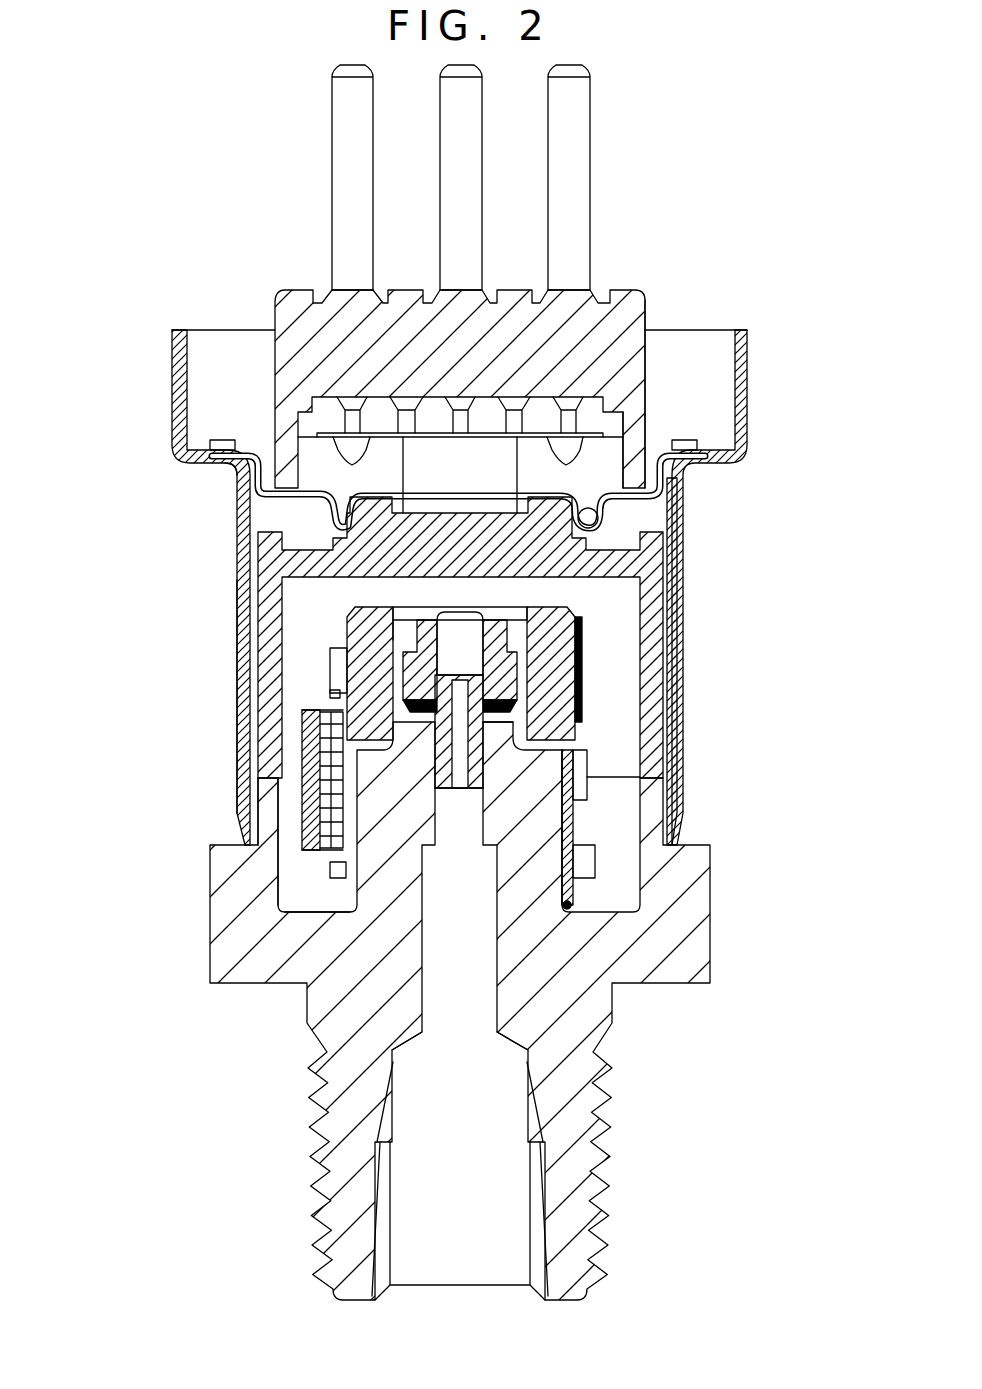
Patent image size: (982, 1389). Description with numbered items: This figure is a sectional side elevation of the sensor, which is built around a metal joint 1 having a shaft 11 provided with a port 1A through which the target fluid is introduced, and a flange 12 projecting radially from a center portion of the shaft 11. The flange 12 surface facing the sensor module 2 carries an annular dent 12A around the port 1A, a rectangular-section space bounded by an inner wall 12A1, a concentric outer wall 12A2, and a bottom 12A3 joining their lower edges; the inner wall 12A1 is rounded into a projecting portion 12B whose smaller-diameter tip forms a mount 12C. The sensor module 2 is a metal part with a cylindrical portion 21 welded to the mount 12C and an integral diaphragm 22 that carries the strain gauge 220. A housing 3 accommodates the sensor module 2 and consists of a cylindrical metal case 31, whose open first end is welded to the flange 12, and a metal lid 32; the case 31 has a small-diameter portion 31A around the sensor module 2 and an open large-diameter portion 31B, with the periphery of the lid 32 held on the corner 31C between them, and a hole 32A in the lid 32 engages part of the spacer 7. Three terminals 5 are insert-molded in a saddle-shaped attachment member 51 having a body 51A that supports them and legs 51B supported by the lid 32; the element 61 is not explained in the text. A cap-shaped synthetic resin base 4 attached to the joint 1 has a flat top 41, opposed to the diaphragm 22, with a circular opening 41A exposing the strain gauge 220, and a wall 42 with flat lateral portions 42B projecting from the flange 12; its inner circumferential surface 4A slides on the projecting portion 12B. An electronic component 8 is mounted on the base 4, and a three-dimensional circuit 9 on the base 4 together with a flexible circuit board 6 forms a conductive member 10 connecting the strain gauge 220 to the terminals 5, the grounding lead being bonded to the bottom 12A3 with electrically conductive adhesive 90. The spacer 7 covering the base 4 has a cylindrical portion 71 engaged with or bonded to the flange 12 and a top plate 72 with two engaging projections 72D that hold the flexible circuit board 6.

The joint 1 is at (238, 1213).
The port 1A is at (390, 1100).
The sensor module 2 is at (630, 608).
The housing 3 is at (190, 300).
The synthetic resin base 4 is at (625, 612).
The inner circumferential surface 4A is at (590, 773).
The terminal 5 is at (363, 168).
The flexible circuit board 6 is at (300, 688).
The spacer 7 is at (262, 520).
The electronic component 8 is at (328, 662).
The three-dimensional circuit 9 is at (320, 613).
The conductive member 10 is at (122, 625).
The shaft 11 is at (560, 1035).
The flange 12 is at (680, 913).
The annular dent 12A is at (80, 832).
The inner wall 12A1 is at (250, 840).
The outer wall 12A2 is at (280, 862).
The bottom 12A3 is at (283, 903).
The projecting portion 12B is at (547, 818).
The mount 12C is at (497, 728).
The cylindrical portion 21 is at (515, 668).
The diaphragm 22 is at (512, 642).
The case 31 is at (158, 447).
The small-diameter portion 31A is at (237, 577).
The large-diameter portion 31B is at (175, 388).
The corner 31C is at (205, 465).
The lid 32 is at (338, 527).
The hole 32A is at (600, 520).
The top 41 is at (512, 625).
The circular opening 41A is at (460, 617).
The wall 42 is at (553, 725).
The lateral portions 42B is at (300, 718).
The attachment member 51 is at (295, 270).
The body 51A is at (635, 317).
The legs 51B is at (632, 445).
The terminal board 61 is at (490, 455).
The cylindrical portion 71 is at (683, 647).
The top plate 72 is at (655, 570).
The engaging projections 72D is at (370, 508).
The electrically conductive adhesive 90 is at (570, 905).
The strain gauge 220 is at (372, 588).